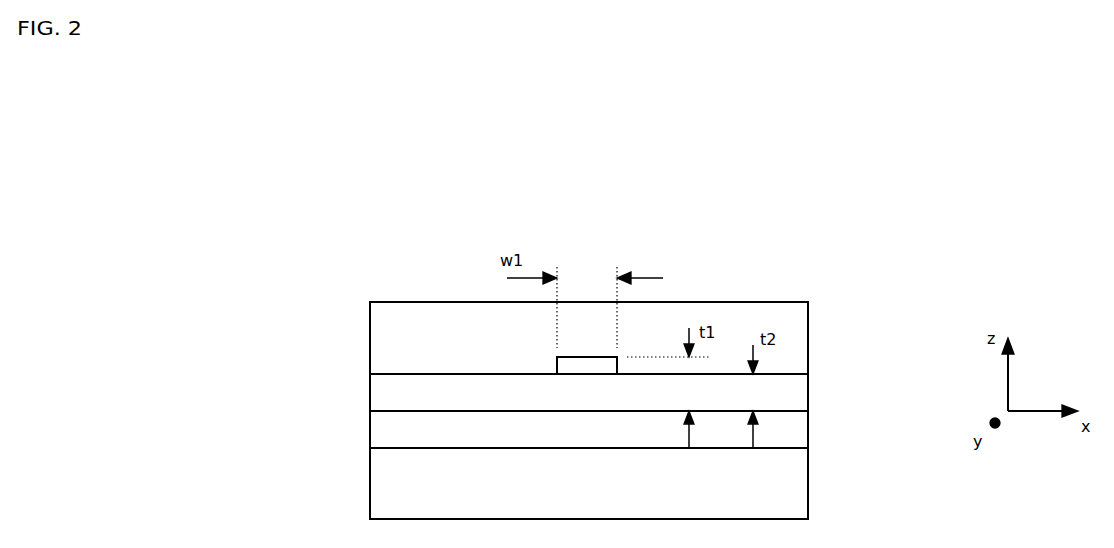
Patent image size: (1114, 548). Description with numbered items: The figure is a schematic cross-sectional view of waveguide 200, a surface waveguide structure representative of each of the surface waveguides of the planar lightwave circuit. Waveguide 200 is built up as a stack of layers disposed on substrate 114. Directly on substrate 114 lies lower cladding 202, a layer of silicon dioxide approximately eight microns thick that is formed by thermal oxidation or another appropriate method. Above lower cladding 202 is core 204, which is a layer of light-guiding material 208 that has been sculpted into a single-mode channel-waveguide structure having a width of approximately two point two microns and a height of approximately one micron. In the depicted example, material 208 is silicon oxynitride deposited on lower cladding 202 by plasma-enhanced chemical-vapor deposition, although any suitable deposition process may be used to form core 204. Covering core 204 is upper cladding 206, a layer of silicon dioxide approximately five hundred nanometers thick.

The waveguide 200 is at (280, 292).
The upper cladding 206 is at (424, 356).
The light-guiding material 208 is at (782, 391).
The core 204 is at (424, 403).
The lower cladding 202 is at (424, 440).
The substrate 114 is at (424, 503).